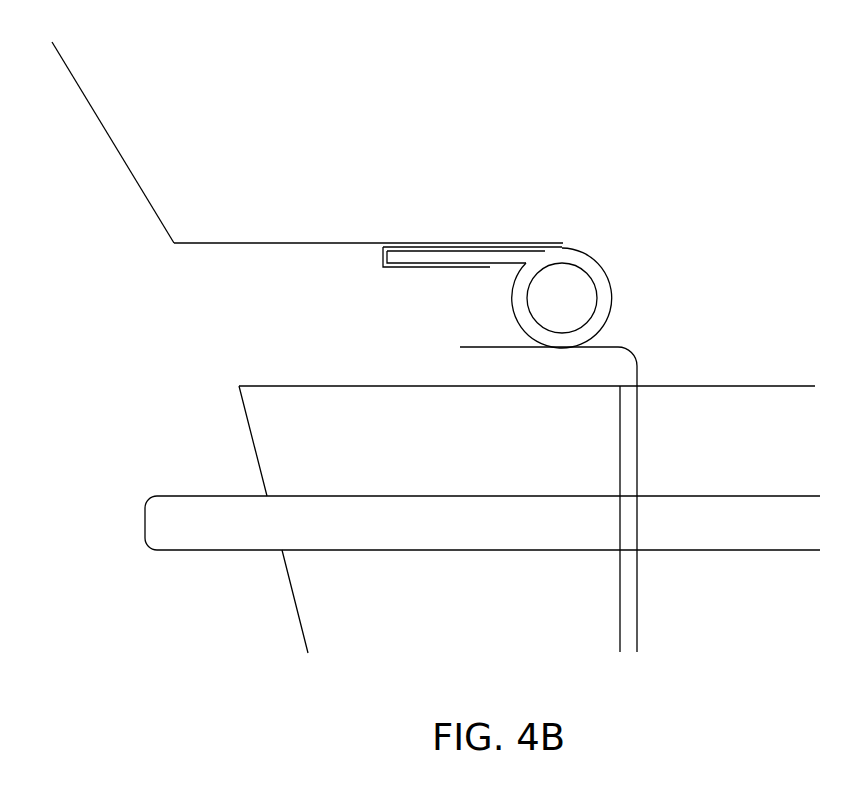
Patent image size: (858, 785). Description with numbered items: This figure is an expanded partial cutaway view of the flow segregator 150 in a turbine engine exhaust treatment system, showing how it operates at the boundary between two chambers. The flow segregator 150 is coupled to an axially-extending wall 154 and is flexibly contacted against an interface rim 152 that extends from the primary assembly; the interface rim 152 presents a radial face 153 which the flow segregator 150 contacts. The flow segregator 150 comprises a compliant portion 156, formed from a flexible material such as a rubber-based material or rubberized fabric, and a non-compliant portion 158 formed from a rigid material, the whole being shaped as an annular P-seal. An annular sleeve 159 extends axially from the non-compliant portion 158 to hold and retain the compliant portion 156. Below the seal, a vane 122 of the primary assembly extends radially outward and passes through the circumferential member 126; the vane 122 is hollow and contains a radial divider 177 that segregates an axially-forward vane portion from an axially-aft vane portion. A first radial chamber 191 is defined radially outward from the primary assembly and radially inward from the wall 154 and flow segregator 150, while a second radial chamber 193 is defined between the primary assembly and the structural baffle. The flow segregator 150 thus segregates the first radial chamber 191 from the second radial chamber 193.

The vane 122 is at (780, 385).
The circumferential member 126 is at (152, 495).
The flow segregator 150 is at (668, 253).
The interface rim 152 is at (637, 362).
The radial face 153 is at (488, 348).
The axially-extending wall 154 is at (112, 142).
The compliant portion 156 is at (612, 302).
The non-compliant portion 158 is at (325, 243).
The annular sleeve 159 is at (400, 267).
The radial divider 177 is at (625, 435).
The first radial chamber 191 is at (337, 358).
The second radial chamber 193 is at (813, 137).